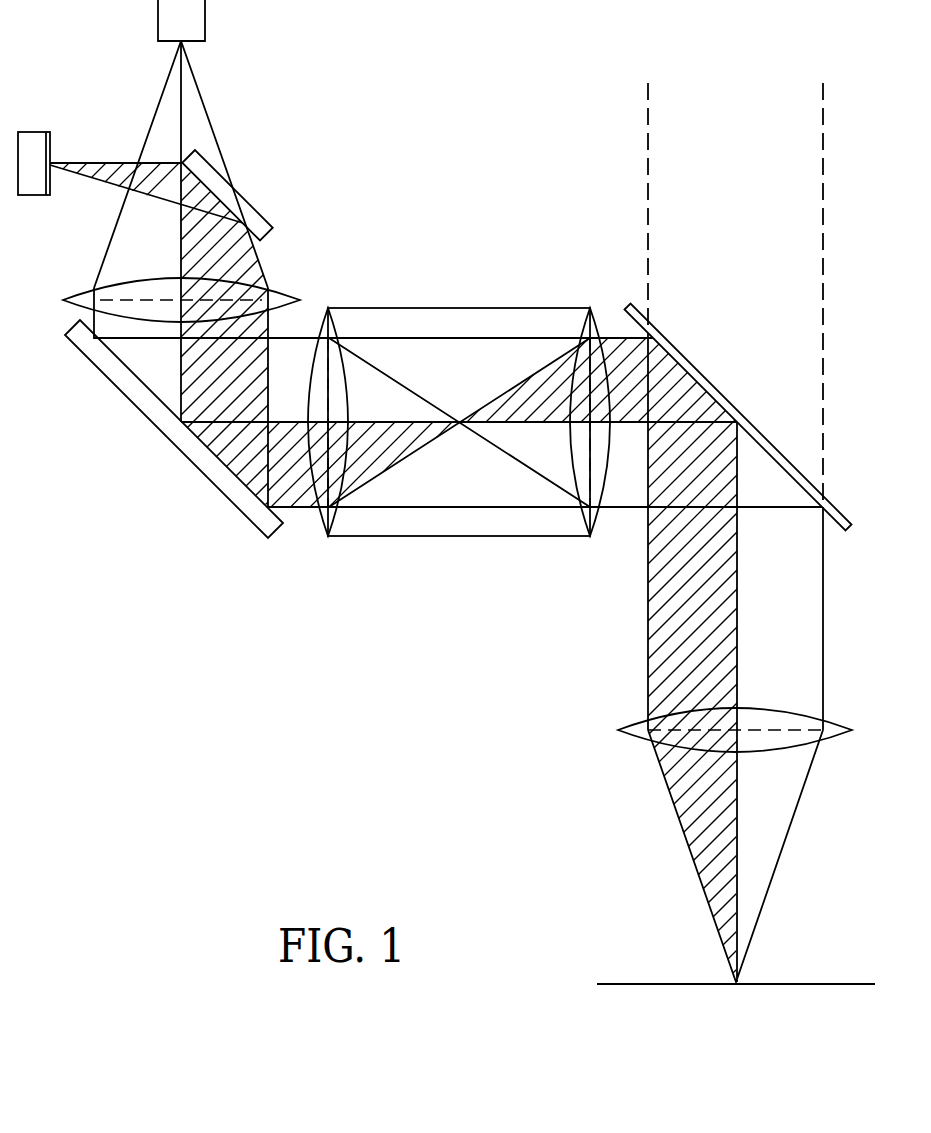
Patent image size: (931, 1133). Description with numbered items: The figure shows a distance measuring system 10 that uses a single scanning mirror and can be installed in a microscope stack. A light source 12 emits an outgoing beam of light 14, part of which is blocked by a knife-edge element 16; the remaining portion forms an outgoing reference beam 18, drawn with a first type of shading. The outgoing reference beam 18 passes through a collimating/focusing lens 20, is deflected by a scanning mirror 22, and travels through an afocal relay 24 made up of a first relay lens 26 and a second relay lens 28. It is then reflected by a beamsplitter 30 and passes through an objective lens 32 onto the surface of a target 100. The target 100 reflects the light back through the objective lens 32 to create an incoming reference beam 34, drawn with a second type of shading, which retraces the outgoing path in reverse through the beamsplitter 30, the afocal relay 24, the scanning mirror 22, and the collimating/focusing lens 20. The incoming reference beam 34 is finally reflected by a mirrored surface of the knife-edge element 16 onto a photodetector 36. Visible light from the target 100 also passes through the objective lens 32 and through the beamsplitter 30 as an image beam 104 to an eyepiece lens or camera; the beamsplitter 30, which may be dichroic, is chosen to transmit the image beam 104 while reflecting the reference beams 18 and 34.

The distance measuring system 10 is at (495, 156).
The light source 12 is at (200, 18).
The outgoing beam of light 14 is at (200, 92).
The knife-edge element 16 is at (238, 198).
The outgoing reference beam 18 is at (125, 247).
The collimating/focusing lens 20 is at (90, 292).
The scanning mirror 22 is at (140, 408).
The afocal relay 24 is at (457, 538).
The first relay lens 26 is at (340, 333).
The second relay lens 28 is at (580, 333).
The beamsplitter 30 is at (768, 443).
The objective lens 32 is at (838, 737).
The incoming reference beam 34 is at (102, 173).
The photodetector 36 is at (33, 137).
The target 100 is at (793, 983).
The image beam 104 is at (668, 213).